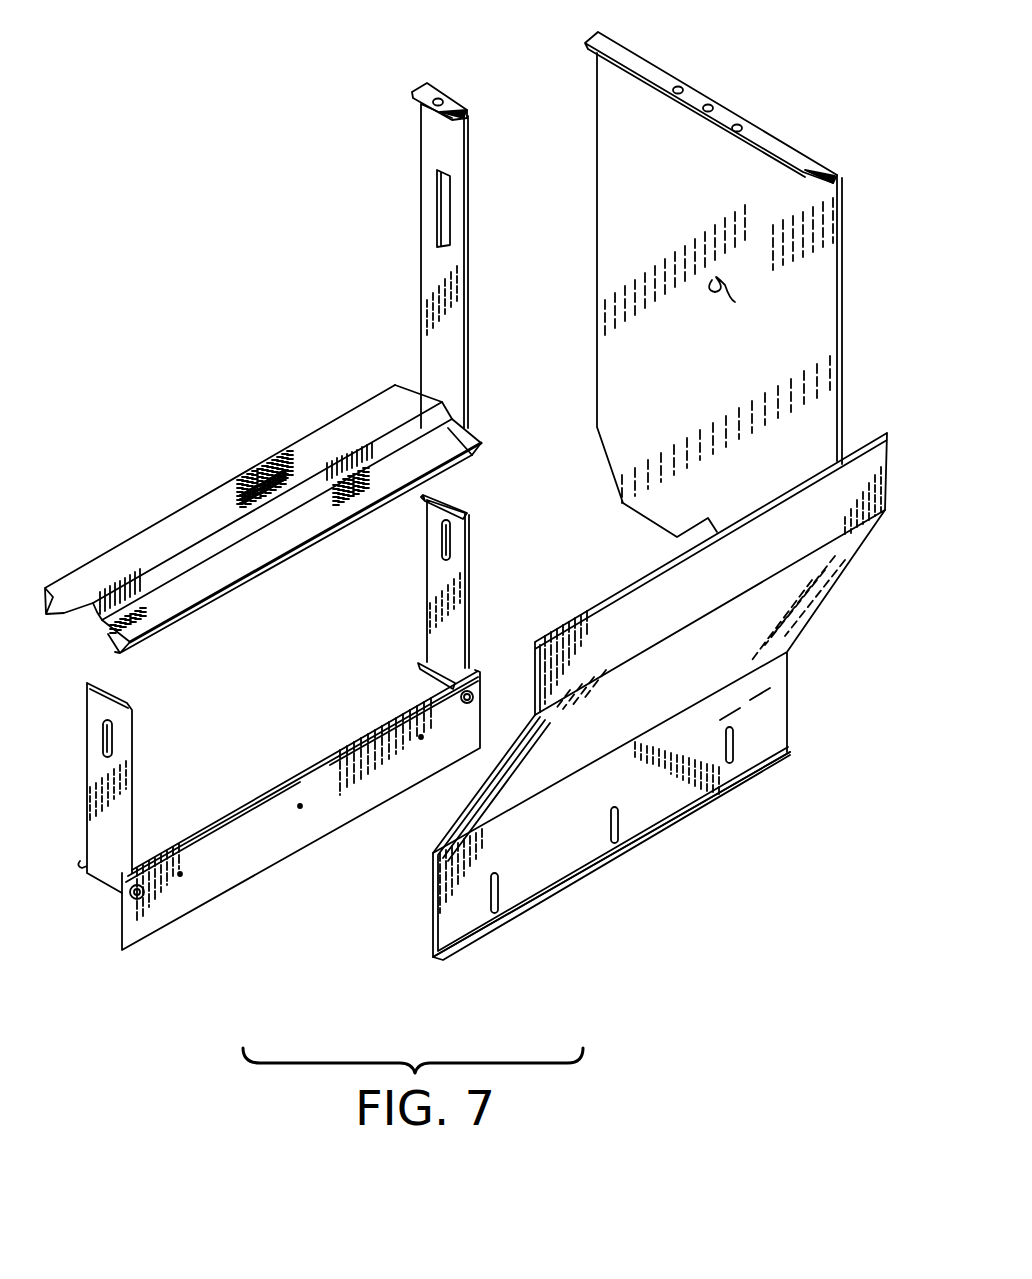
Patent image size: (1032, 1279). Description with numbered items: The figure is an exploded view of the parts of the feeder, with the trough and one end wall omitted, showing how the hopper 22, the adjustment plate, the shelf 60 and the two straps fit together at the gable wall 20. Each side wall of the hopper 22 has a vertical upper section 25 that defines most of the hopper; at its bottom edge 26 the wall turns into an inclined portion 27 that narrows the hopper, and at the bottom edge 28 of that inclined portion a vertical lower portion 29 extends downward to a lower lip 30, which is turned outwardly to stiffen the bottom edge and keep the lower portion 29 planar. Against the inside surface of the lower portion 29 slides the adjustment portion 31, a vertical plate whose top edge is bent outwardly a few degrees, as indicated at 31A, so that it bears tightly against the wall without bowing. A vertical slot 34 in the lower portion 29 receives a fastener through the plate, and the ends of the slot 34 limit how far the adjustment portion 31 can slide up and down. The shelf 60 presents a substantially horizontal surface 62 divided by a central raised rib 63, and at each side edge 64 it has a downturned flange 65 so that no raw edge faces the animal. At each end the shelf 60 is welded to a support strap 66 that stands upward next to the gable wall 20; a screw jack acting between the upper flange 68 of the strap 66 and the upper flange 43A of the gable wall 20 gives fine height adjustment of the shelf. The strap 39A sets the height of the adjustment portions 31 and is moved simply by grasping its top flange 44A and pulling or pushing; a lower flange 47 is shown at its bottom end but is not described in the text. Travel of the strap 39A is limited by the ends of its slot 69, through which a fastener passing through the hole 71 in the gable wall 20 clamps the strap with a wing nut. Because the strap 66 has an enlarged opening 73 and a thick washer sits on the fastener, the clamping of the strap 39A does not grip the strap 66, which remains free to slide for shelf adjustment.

The gable wall 20 is at (701, 284).
The hopper 22 is at (673, 696).
The vertical upper section 25 is at (640, 600).
The bottom edge of upper section 26 is at (710, 612).
The inclined portion 27 is at (830, 580).
The bottom edge of inclined portion 28 is at (760, 675).
The vertical lower portion 29 is at (765, 722).
The lower lip 30 is at (735, 795).
The adjustment portion 31 is at (279, 810).
The bent top edge 31A is at (345, 742).
The vertical slot 34 is at (620, 820).
The strap 39A is at (448, 585).
The upper flange of gable wall 43A is at (785, 150).
The flange 44A is at (455, 497).
The lower flange of bracket 47 is at (430, 670).
The shelf 60 is at (263, 524).
The horizontal surface 62 is at (182, 525).
The central raised rib 63 is at (373, 435).
The side edge 64 is at (110, 548).
The downturned flange 65 is at (200, 613).
The support strap 66 is at (435, 284).
The upper flange of support strap 68 is at (422, 90).
The slot 69 is at (442, 542).
The hole 71 is at (738, 297).
The enlarged opening 73 is at (441, 207).